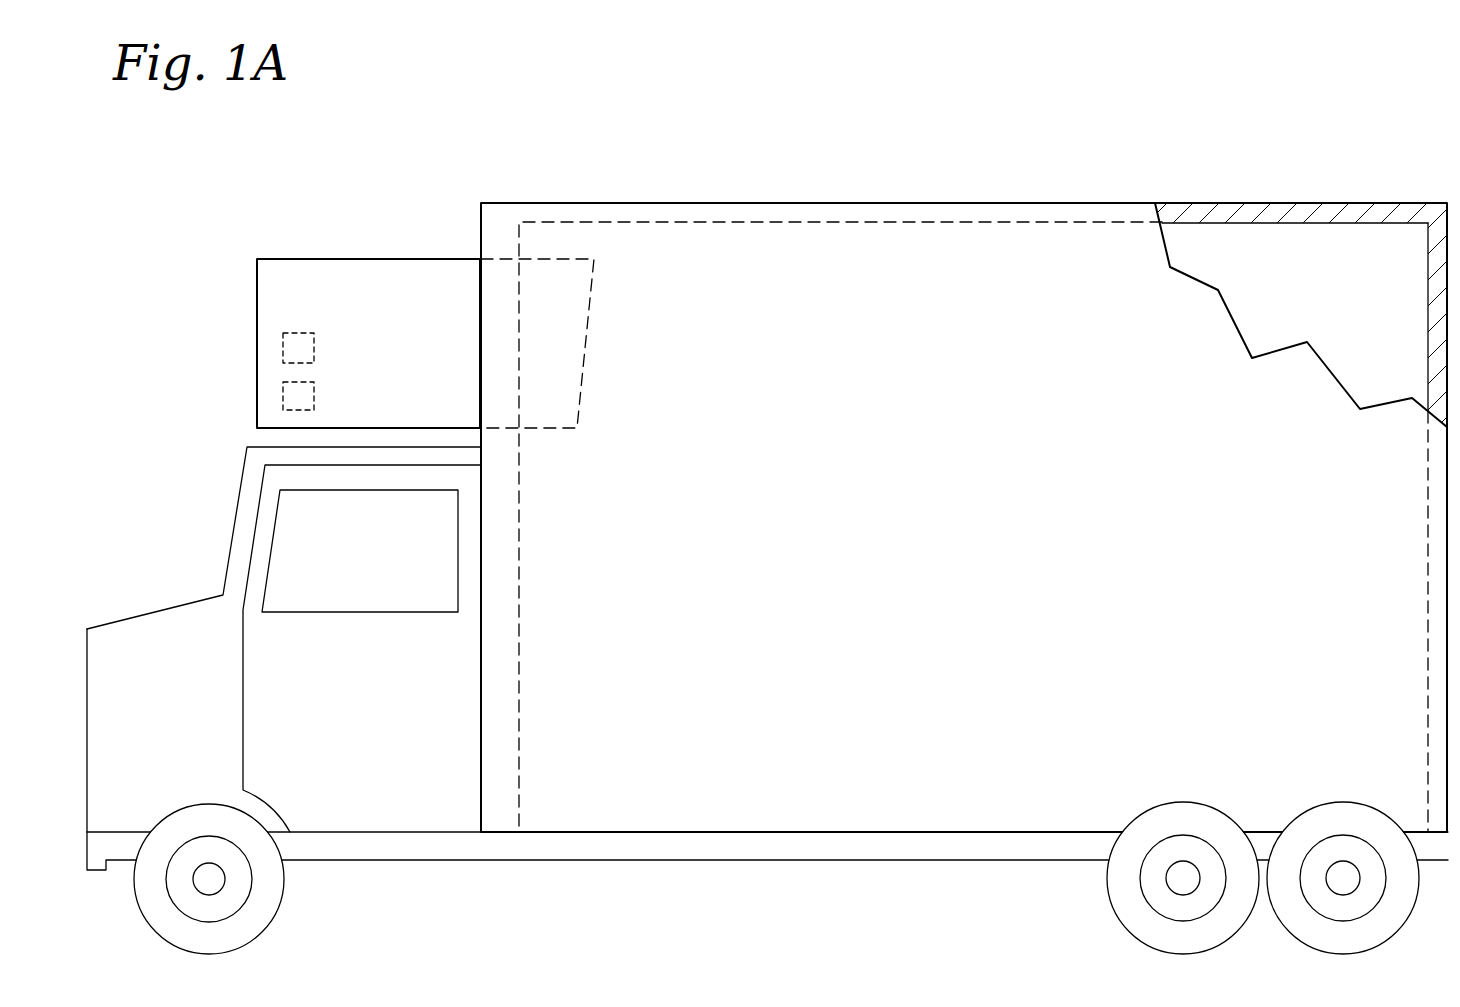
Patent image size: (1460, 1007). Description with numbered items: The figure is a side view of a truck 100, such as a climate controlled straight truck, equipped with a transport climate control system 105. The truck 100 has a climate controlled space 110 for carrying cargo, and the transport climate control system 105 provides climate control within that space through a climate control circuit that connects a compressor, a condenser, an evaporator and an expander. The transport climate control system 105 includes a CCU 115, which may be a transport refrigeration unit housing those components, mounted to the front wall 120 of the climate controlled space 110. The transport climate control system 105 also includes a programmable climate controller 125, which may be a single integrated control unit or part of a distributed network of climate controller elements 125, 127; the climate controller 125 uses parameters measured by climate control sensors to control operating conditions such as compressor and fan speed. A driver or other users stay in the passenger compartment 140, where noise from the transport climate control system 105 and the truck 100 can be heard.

The truck 100 is at (1029, 160).
The transport climate control system 105 is at (283, 479).
The climate controlled space 110 is at (1245, 257).
The CCU 115 is at (329, 318).
The front wall 120 is at (520, 282).
The climate controller 125 is at (283, 393).
The climate controller element 127 is at (283, 343).
The passenger compartment 140 is at (296, 556).